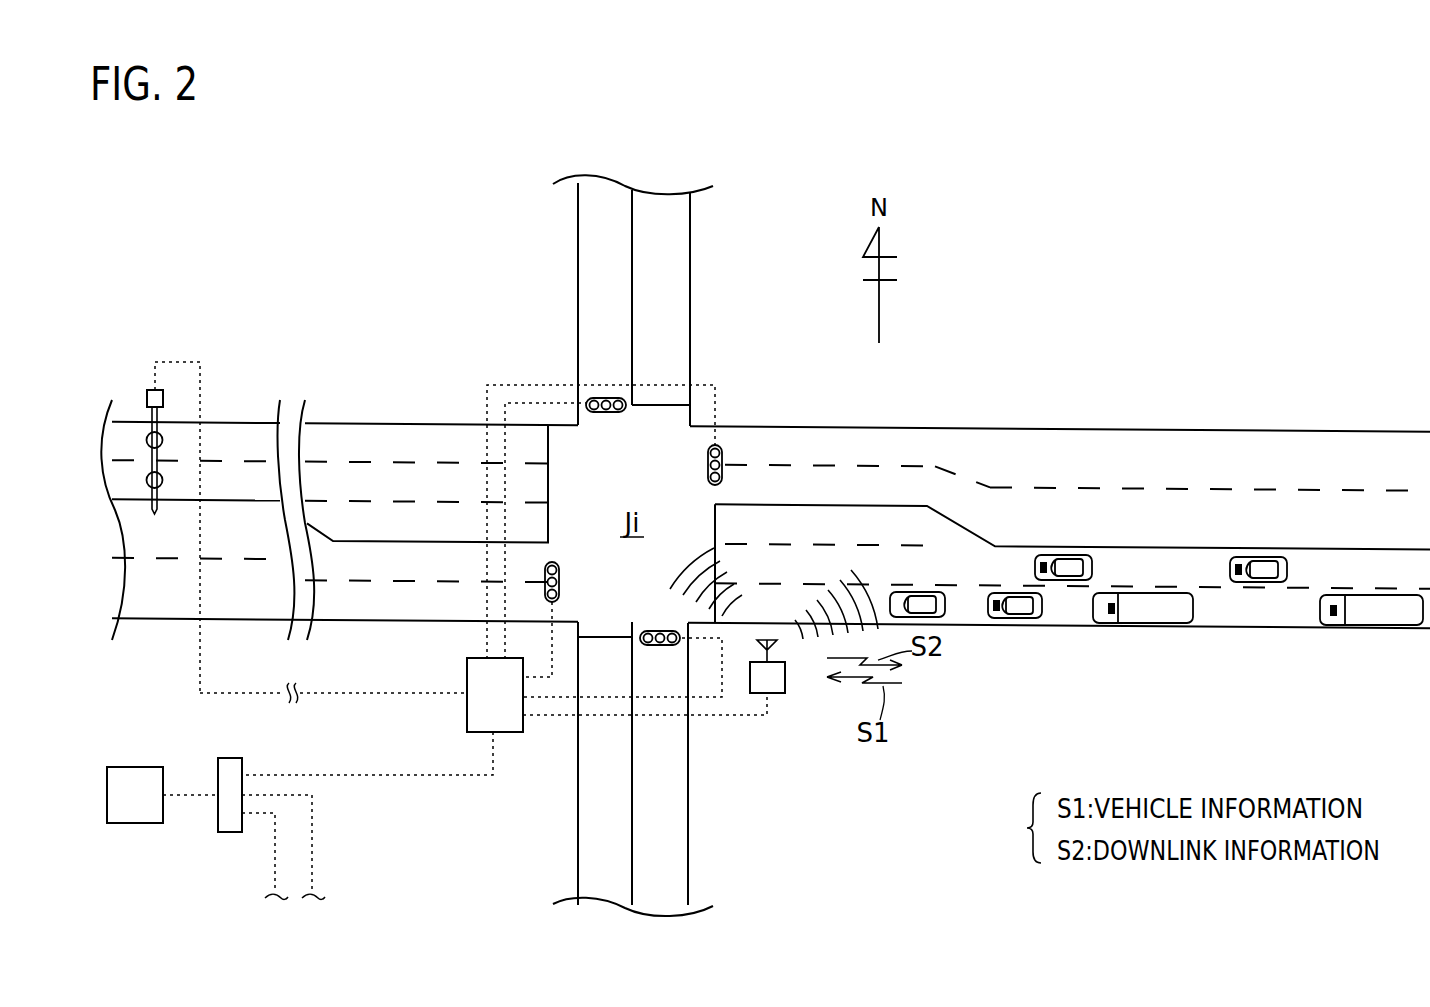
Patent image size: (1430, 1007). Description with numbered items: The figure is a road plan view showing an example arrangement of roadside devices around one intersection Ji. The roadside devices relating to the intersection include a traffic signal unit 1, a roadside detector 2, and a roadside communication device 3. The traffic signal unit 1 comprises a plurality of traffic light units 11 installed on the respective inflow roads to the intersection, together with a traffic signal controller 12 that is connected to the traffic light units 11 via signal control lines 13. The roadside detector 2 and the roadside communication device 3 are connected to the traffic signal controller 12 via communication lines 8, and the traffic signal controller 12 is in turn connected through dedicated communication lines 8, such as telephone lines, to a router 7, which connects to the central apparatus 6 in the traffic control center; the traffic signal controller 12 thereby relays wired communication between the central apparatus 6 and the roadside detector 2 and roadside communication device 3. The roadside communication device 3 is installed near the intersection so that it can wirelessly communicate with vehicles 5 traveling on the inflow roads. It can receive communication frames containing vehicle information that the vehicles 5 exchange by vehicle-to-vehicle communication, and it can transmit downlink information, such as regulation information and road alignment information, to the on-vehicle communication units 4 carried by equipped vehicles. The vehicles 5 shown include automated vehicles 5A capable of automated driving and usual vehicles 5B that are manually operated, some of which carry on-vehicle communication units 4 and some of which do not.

The traffic signal unit 1 is at (729, 348).
The roadside detector 2 is at (148, 440).
The roadside communication device 3 is at (785, 680).
The on-vehicle communication unit 4 is at (1043, 558).
The vehicle 5 is at (925, 590).
The automated vehicle 5A is at (1265, 585).
The usual vehicle 5B is at (1072, 555).
The central apparatus 6 is at (127, 810).
The router 7 is at (230, 832).
The communication line 8 is at (190, 673).
The traffic light unit 11 is at (598, 400).
The traffic signal controller 12 is at (481, 710).
The signal control line 13 is at (480, 453).